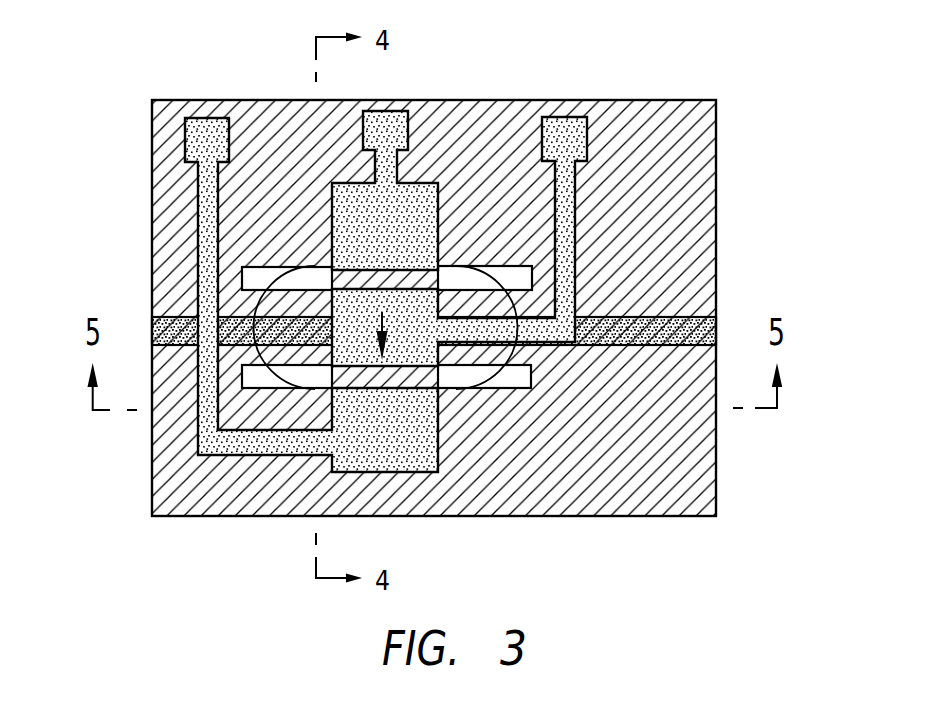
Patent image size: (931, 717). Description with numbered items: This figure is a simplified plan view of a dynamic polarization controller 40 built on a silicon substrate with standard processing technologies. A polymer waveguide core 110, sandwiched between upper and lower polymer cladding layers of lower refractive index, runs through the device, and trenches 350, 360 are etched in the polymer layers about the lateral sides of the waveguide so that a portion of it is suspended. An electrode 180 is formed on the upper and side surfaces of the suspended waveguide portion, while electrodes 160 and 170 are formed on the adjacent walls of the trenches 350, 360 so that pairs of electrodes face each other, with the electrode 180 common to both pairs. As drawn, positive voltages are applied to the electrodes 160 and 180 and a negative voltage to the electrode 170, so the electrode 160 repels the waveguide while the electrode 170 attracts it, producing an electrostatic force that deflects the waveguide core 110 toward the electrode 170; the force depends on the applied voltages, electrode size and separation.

The dynamic polarization controller 40 is at (735, 85).
The polymer waveguide core 110 is at (143, 330).
The electrode 160 is at (405, 192).
The electrode 170 is at (407, 452).
The electrode 180 is at (415, 343).
The trench 350 is at (522, 283).
The trench 360 is at (530, 375).